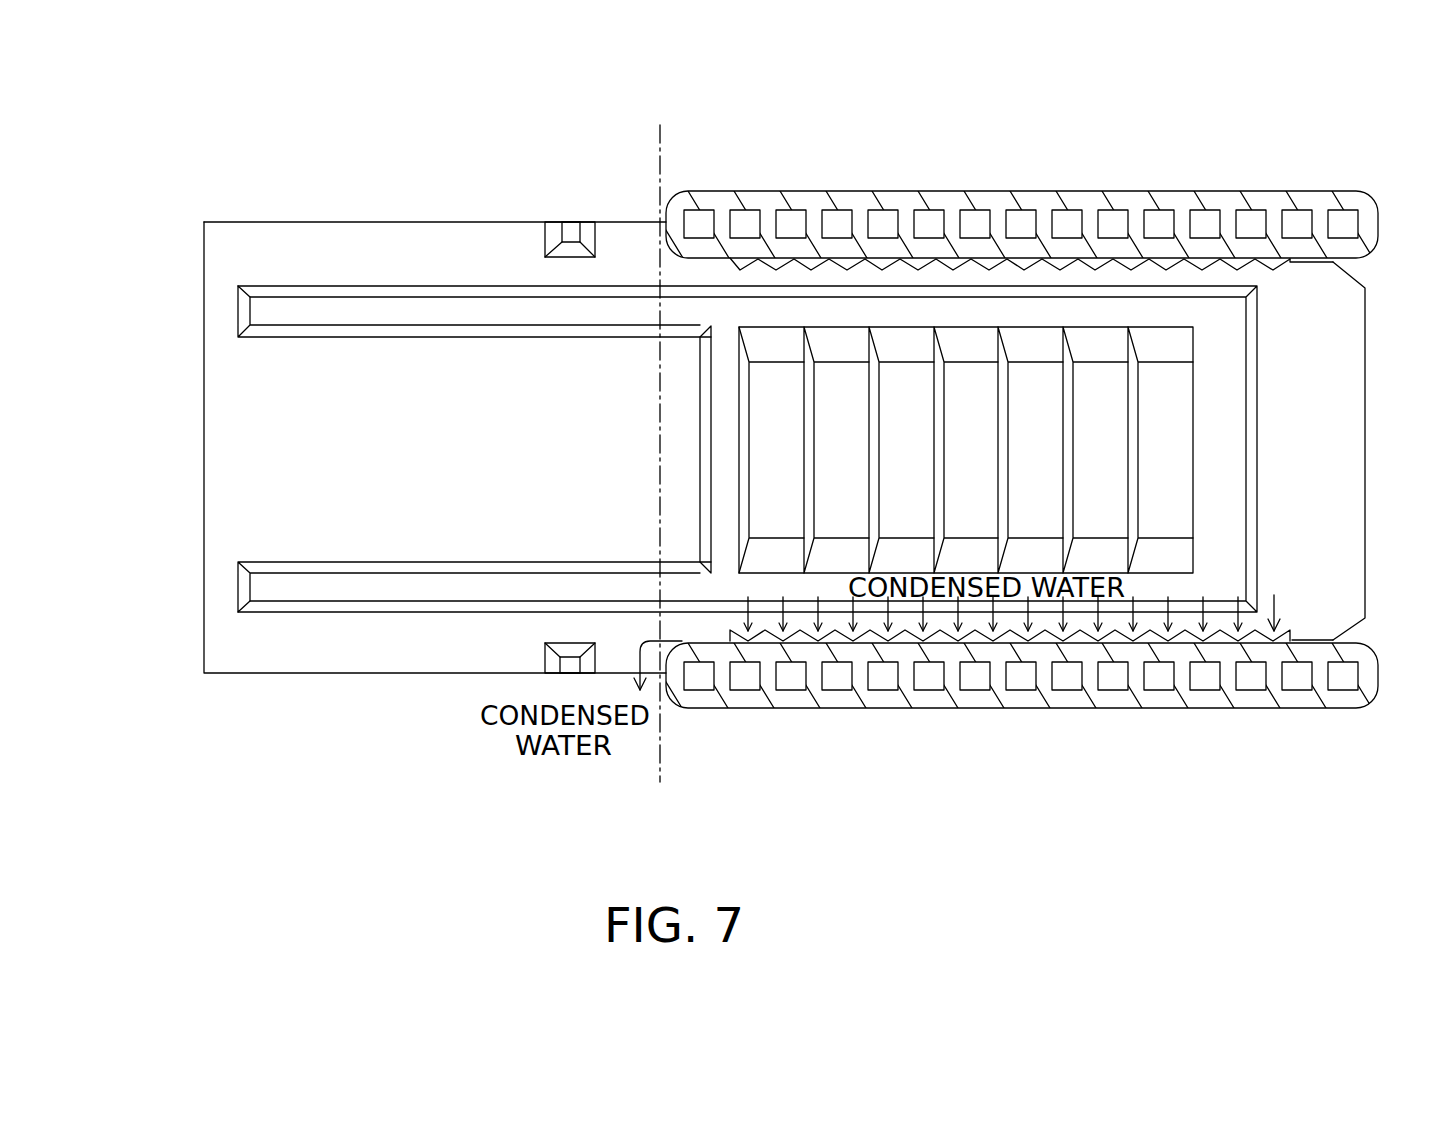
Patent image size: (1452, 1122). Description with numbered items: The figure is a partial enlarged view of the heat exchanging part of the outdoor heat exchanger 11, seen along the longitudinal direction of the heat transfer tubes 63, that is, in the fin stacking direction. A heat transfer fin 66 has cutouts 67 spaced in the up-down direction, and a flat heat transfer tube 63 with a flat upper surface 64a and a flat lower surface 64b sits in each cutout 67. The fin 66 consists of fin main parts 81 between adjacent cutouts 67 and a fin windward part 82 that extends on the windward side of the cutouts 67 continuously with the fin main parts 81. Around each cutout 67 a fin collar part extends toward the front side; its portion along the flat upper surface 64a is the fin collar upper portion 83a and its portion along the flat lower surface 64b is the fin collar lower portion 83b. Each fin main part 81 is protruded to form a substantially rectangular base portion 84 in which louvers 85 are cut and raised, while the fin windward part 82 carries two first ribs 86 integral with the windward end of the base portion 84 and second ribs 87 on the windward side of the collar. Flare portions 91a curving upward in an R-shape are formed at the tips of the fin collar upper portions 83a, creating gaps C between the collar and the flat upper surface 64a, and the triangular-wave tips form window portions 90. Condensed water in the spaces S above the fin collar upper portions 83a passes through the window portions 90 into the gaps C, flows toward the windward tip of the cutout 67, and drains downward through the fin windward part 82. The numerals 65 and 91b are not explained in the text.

The outdoor heat exchanger 11 is at (172, 152).
The heat transfer fin 66 is at (272, 220).
The fin windward part 82 is at (278, 405).
The second rib 87 is at (566, 232).
The fin main part 81 is at (1280, 385).
The first rib 86 is at (258, 314).
The base portion 84 is at (724, 482).
The louver 85 is at (758, 423).
The space S is at (1178, 512).
The heat transfer tube 63 is at (713, 189).
The fin collar lower portion 83b is at (1320, 253).
The fin collar upper portion 83a is at (1313, 645).
The refrigerant passage 65 is at (880, 209).
The flat lower surface 64b is at (815, 268).
The flat upper surface 64a is at (1175, 192).
The cutout 67 is at (1352, 270).
The outlet 91b is at (1265, 262).
The flare portion 91a is at (1283, 628).
The gap C is at (800, 647).
The window portion 90 is at (923, 645).